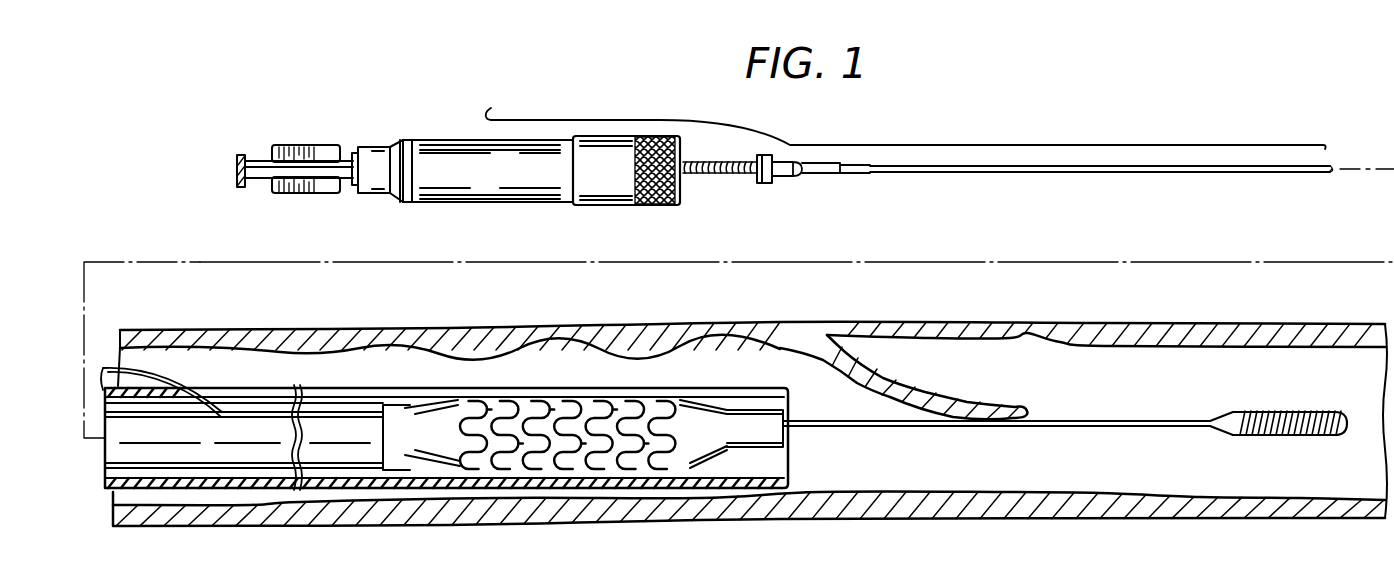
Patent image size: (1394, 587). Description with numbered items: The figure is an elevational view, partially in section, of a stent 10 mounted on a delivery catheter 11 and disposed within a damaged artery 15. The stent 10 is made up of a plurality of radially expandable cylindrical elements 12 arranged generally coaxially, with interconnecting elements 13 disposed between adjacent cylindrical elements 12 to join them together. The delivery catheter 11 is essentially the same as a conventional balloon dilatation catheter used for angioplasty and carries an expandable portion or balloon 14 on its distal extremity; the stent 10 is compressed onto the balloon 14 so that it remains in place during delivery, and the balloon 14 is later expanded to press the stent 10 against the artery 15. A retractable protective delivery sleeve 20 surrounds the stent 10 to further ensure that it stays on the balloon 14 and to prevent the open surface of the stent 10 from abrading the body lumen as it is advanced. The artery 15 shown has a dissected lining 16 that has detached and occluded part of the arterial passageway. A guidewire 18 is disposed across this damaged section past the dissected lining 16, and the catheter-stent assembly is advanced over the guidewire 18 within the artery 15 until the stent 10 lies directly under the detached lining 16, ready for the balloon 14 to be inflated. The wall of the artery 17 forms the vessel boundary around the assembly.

The stent 10 is at (551, 411).
The delivery catheter 11 is at (1152, 173).
The cylindrical elements 12 is at (586, 401).
The interconnecting elements 13 is at (573, 432).
The balloon 14 is at (400, 442).
The artery 15 is at (977, 491).
The dissected lining 16 is at (898, 400).
The arterial wall 17 is at (1100, 510).
The guidewire 18 is at (1173, 420).
The retractable protective delivery sleeve 20 is at (440, 485).